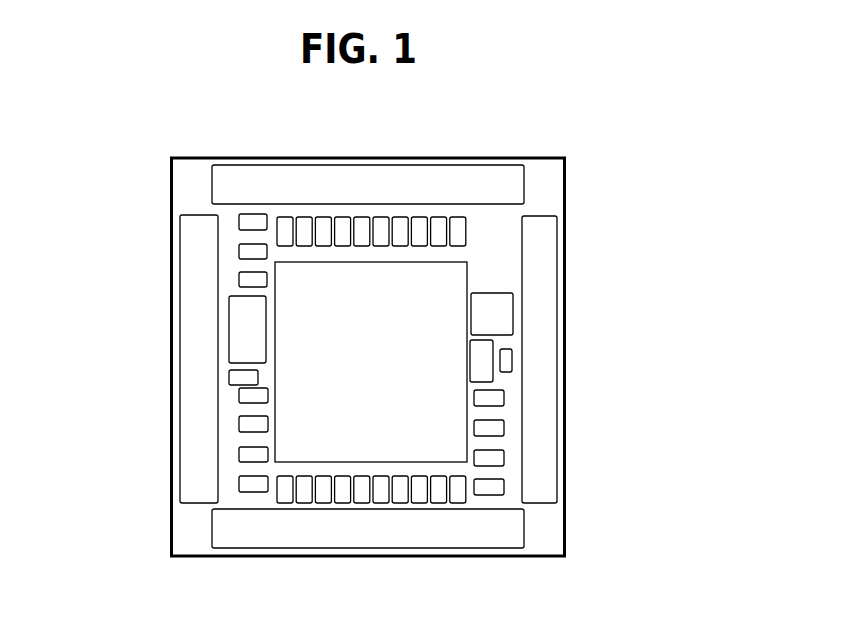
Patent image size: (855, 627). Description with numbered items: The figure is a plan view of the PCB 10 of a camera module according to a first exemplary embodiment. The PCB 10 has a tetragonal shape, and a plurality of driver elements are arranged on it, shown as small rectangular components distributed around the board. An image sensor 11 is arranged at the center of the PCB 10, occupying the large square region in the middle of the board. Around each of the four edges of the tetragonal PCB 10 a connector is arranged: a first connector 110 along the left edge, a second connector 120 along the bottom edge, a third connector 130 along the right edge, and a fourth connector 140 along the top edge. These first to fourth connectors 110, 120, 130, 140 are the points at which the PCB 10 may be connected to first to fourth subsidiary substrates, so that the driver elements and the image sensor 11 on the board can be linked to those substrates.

The PCB 10 is at (555, 188).
The image sensor 11 is at (440, 292).
The first connector 110 is at (186, 433).
The second connector 120 is at (488, 540).
The third connector 130 is at (550, 395).
The fourth connector 140 is at (462, 176).